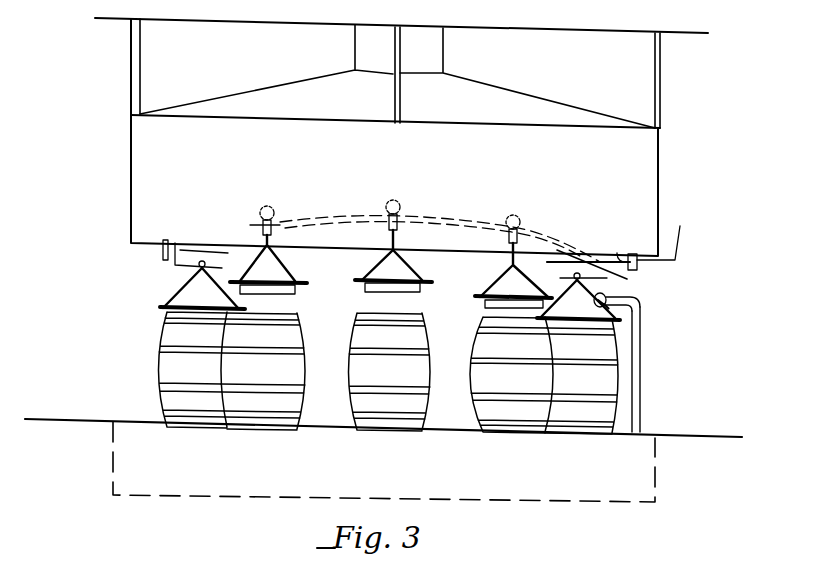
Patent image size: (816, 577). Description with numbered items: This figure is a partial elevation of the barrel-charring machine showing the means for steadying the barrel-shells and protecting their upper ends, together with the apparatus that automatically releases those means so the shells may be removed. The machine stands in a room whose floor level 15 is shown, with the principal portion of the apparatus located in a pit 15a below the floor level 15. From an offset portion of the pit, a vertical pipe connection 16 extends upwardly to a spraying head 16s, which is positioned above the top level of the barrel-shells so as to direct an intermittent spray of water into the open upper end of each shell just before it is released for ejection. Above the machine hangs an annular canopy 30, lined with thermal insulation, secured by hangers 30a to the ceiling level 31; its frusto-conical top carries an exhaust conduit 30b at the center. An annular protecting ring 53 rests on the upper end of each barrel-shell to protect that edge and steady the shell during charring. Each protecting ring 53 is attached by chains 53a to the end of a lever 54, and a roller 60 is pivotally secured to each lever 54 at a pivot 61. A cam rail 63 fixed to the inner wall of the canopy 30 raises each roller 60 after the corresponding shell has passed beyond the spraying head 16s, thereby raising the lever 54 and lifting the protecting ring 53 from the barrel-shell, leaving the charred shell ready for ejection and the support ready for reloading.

The floor level 15 is at (697, 437).
The pit 15a is at (635, 442).
The vertical pipe connection 16 is at (641, 365).
The spraying head 16s is at (641, 313).
The annular canopy 30 is at (657, 187).
The hangers 30a is at (141, 66).
The exhaust conduit 30b is at (355, 40).
The ceiling level 31 is at (591, 34).
The protecting ring 53 is at (477, 296).
The chains 53a is at (286, 268).
The lever 54 is at (607, 279).
The roller 60 is at (521, 223).
The pivot 61 is at (662, 234).
The cam rail 63 is at (552, 243).